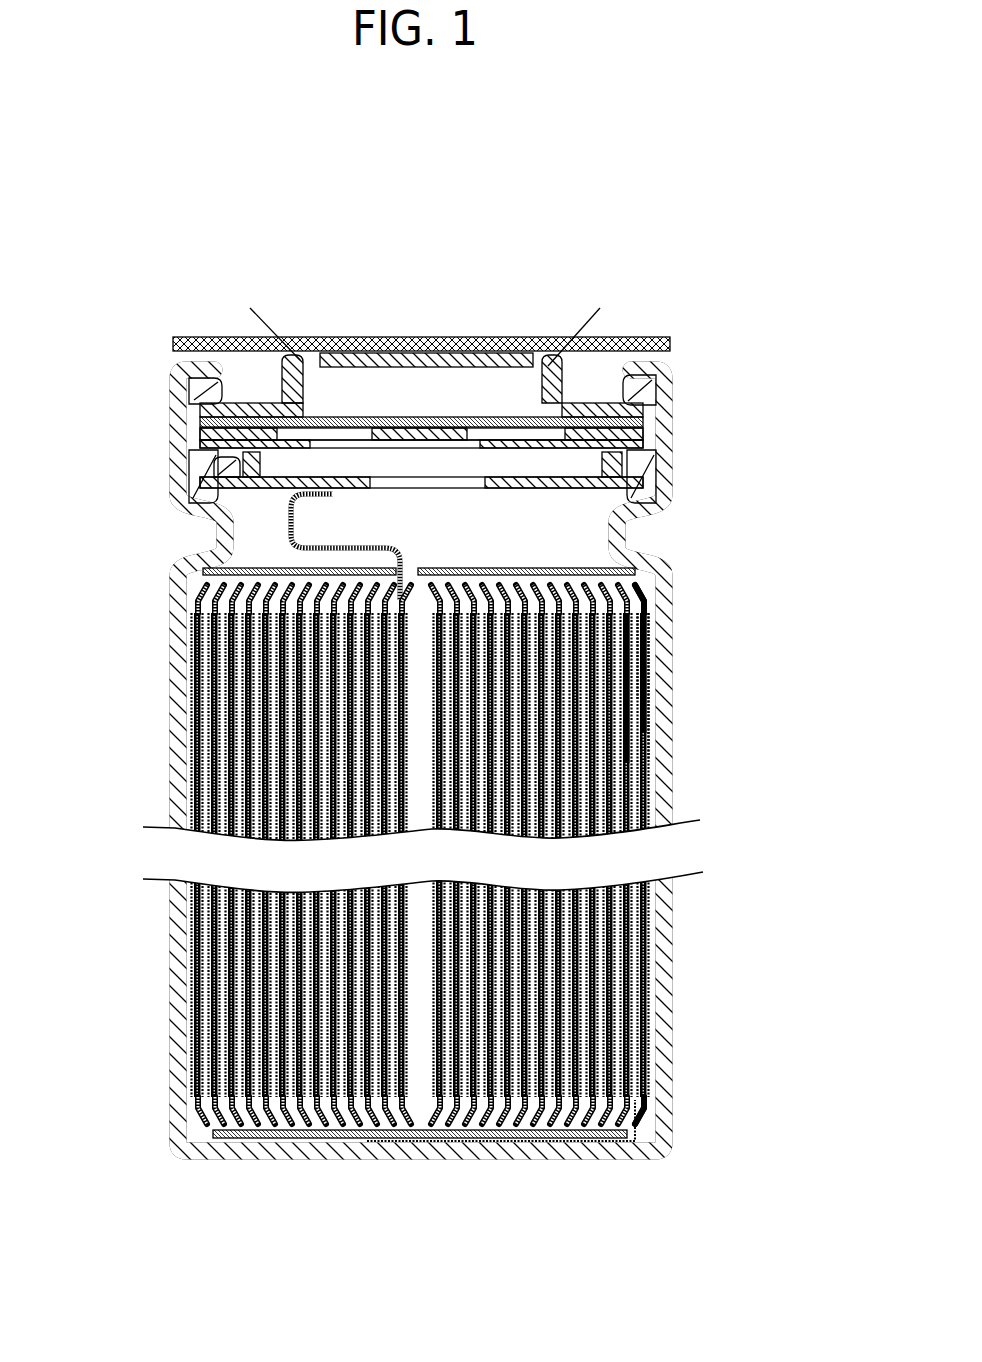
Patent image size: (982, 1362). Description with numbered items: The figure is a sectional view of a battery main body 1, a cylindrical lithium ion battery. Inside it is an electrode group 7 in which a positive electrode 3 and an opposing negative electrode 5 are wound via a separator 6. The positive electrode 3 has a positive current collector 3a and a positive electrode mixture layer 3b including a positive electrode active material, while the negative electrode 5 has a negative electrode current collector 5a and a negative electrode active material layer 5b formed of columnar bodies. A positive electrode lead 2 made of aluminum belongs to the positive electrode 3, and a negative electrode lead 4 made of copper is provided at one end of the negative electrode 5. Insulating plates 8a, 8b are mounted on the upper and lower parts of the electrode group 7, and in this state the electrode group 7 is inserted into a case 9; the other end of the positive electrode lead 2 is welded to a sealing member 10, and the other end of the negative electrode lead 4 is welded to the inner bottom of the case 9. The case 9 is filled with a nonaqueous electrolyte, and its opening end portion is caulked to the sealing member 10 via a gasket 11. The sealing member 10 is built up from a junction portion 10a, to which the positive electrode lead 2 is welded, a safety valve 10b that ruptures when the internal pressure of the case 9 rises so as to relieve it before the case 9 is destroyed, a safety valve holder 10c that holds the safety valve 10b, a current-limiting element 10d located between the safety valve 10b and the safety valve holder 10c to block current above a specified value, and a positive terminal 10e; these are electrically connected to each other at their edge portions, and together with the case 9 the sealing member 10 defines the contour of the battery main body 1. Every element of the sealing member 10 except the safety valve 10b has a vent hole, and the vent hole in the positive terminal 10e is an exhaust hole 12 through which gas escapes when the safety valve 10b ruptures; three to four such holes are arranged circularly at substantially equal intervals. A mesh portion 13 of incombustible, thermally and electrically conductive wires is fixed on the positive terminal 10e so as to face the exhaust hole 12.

The battery main body 1 is at (402, 760).
The positive electrode lead 2 is at (318, 543).
The positive electrode 3 is at (722, 659).
The positive current collector 3a is at (655, 625).
The positive electrode mixture layer 3b is at (650, 660).
The negative electrode lead 4 is at (636, 1125).
The negative electrode 5 is at (716, 689).
The negative electrode current collector 5a is at (650, 722).
The negative electrode active material layer 5b is at (650, 690).
The separator 6 is at (822, 760).
The electrode group 7 is at (528, 848).
The insulating plate 8a is at (253, 570).
The insulating plate 8b is at (217, 1130).
The case 9 is at (666, 947).
The sealing member 10 is at (539, 400).
The junction portion 10a is at (507, 489).
The safety valve 10b is at (640, 418).
The safety valve holder 10c is at (660, 452).
The current-limiting element 10d is at (645, 430).
The positive terminal 10e is at (660, 388).
The gasket 11 is at (190, 387).
The exhaust hole 12 is at (425, 320).
The mesh portion 13 is at (393, 333).